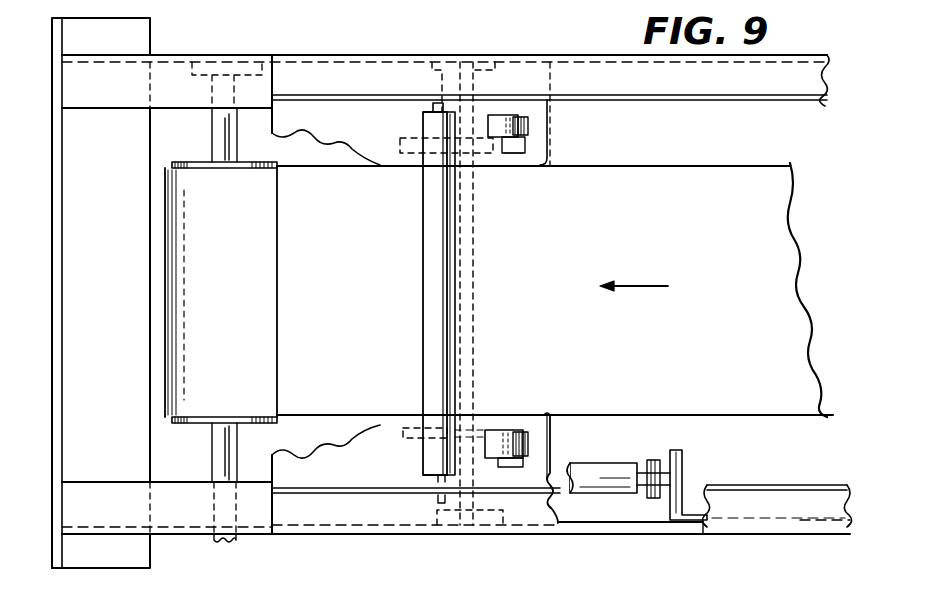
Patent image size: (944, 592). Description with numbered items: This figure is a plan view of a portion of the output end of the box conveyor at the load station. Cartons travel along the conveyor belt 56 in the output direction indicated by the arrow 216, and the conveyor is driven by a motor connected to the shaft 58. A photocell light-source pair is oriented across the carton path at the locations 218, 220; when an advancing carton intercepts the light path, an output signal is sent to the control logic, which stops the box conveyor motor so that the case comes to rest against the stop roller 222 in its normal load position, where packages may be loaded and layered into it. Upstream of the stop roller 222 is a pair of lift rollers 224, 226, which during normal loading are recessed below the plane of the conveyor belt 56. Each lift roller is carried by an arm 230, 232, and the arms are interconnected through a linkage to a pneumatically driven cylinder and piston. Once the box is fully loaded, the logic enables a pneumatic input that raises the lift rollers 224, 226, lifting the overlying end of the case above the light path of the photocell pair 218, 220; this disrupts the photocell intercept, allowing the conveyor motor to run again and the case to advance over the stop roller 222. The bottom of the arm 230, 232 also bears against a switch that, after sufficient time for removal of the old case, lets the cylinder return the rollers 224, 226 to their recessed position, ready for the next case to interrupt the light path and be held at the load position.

The conveyor belt 56 is at (677, 339).
The shaft 58 is at (233, 540).
The arrow 216 is at (663, 266).
The photocell light-source pair location 218 is at (473, 535).
The photocell light-source pair location 220 is at (492, 24).
The stop roller 222 is at (437, 300).
The lift roller 224 is at (533, 467).
The lift roller 226 is at (527, 114).
The arm 230 is at (487, 430).
The arm 232 is at (488, 148).